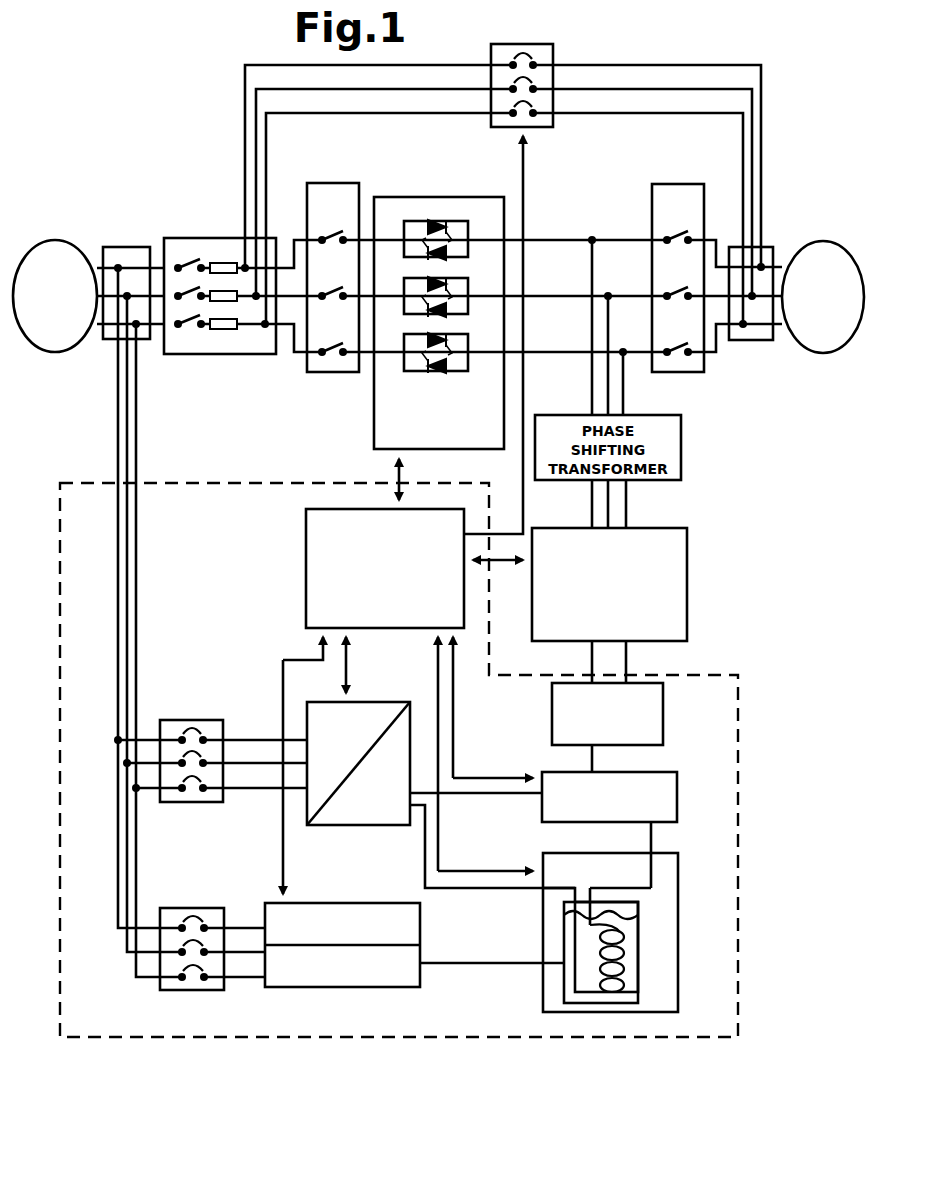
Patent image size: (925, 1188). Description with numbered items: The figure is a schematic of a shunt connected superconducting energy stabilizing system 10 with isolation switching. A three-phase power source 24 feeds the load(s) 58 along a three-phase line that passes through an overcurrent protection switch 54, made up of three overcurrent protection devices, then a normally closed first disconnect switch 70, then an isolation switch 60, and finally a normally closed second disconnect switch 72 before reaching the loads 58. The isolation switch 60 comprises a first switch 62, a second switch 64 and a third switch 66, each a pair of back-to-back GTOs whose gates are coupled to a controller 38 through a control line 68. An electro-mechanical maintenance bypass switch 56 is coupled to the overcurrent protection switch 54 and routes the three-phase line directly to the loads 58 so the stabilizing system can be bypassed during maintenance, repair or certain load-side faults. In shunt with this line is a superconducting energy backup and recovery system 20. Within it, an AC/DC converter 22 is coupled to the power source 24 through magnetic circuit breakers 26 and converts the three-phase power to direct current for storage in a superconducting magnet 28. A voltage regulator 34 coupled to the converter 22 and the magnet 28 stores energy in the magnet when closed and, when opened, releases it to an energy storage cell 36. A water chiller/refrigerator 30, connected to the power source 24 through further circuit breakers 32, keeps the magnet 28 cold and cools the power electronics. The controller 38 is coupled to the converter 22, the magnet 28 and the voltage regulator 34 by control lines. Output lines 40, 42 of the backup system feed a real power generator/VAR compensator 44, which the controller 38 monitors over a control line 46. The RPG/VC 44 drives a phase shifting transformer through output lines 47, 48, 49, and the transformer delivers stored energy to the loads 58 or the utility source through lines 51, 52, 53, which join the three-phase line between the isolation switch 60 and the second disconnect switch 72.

The shunt connected energy stabilizing system 10 is at (127, 168).
The superconducting energy backup and recovery system 20 is at (738, 724).
The AC/DC converter 22 is at (368, 702).
The power source 24 is at (44, 236).
The magnetic circuit breakers 26 is at (203, 720).
The superconducting inductive energy storage device 28 is at (678, 880).
The water chiller/refrigerator 30 is at (351, 903).
The circuit breakers 32 is at (203, 908).
The voltage regulator 34 is at (678, 780).
The energy storage cell 36 is at (665, 710).
The controller 38 is at (306, 538).
The output line 40 is at (590, 661).
The output line 42 is at (628, 667).
The real power generator/VAR compensator 44 is at (689, 557).
The control line 46 is at (493, 566).
The output line 47 is at (590, 498).
The output line 48 is at (606, 517).
The output line 49 is at (628, 514).
The line 51 is at (590, 370).
The line 52 is at (606, 406).
The line 53 is at (625, 404).
The overcurrent protection switch 54 is at (178, 236).
The electro-mechanical maintenance bypass switch 56 is at (547, 48).
The load(s) 58 is at (806, 242).
The isolation switch 60 is at (432, 198).
The first switch 62 is at (460, 222).
The second switch 64 is at (460, 279).
The third switch 66 is at (460, 335).
The control line 68 is at (400, 478).
The first disconnect switch 70 is at (328, 185).
The second disconnect switch 72 is at (672, 186).